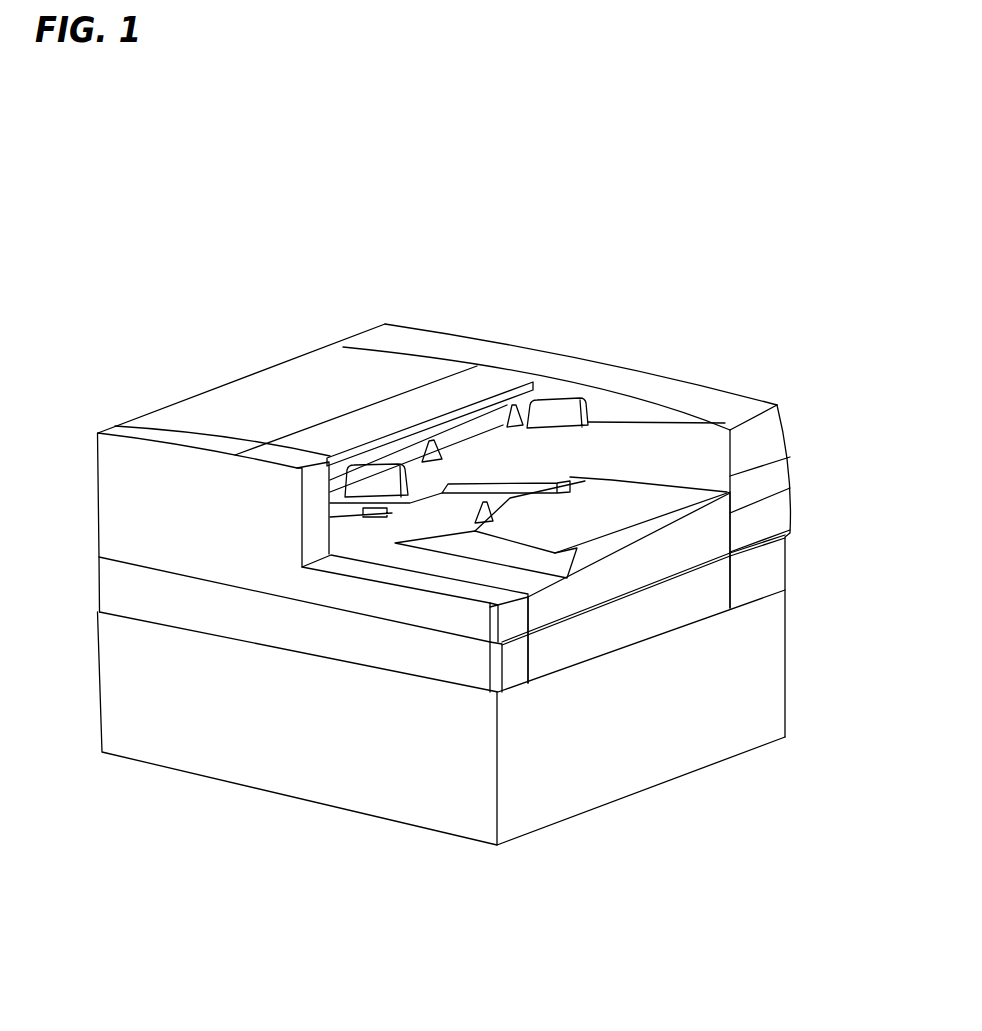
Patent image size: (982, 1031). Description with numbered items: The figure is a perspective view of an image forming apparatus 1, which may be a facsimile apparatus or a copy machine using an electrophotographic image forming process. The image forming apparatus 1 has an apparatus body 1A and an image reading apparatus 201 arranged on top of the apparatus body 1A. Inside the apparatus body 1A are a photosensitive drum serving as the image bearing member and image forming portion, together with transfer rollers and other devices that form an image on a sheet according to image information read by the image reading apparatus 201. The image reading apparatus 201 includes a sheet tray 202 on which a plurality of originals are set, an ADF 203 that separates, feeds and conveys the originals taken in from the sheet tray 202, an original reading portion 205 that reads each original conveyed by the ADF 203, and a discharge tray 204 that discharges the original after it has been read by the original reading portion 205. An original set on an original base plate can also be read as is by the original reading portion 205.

The image forming apparatus 1 is at (345, 293).
The apparatus body 1A is at (785, 673).
The image reading apparatus 201 is at (485, 330).
The sheet tray 202 is at (626, 437).
The ADF 203 is at (265, 392).
The discharge tray 204 is at (468, 547).
The original reading portion 205 is at (605, 628).